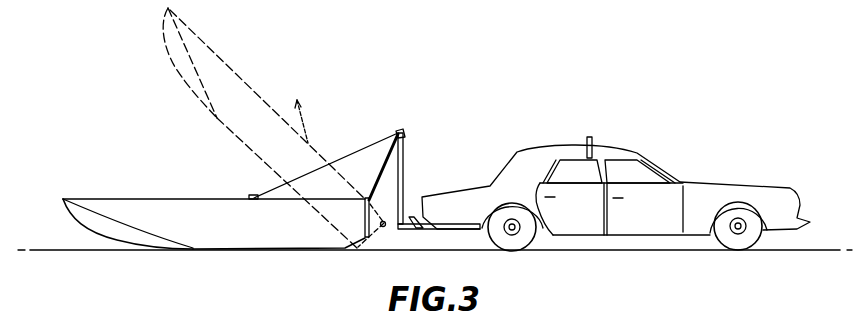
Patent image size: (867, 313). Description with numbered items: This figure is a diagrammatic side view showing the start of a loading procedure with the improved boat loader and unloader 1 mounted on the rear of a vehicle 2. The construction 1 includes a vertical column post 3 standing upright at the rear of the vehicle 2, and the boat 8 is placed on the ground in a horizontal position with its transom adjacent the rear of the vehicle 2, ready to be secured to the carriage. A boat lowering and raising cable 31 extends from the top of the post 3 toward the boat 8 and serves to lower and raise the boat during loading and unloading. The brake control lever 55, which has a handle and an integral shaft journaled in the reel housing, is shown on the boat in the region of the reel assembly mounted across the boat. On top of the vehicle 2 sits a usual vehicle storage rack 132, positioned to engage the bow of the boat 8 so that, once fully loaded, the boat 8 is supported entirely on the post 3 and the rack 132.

The boat loader and unloader 1 is at (414, 149).
The vehicle 2 is at (727, 181).
The vertical column post 3 is at (404, 173).
The boat 8 is at (136, 198).
The boat lowering and raising cable 31 is at (355, 152).
The brake control lever 55 is at (251, 198).
The vehicle storage rack 132 is at (592, 138).